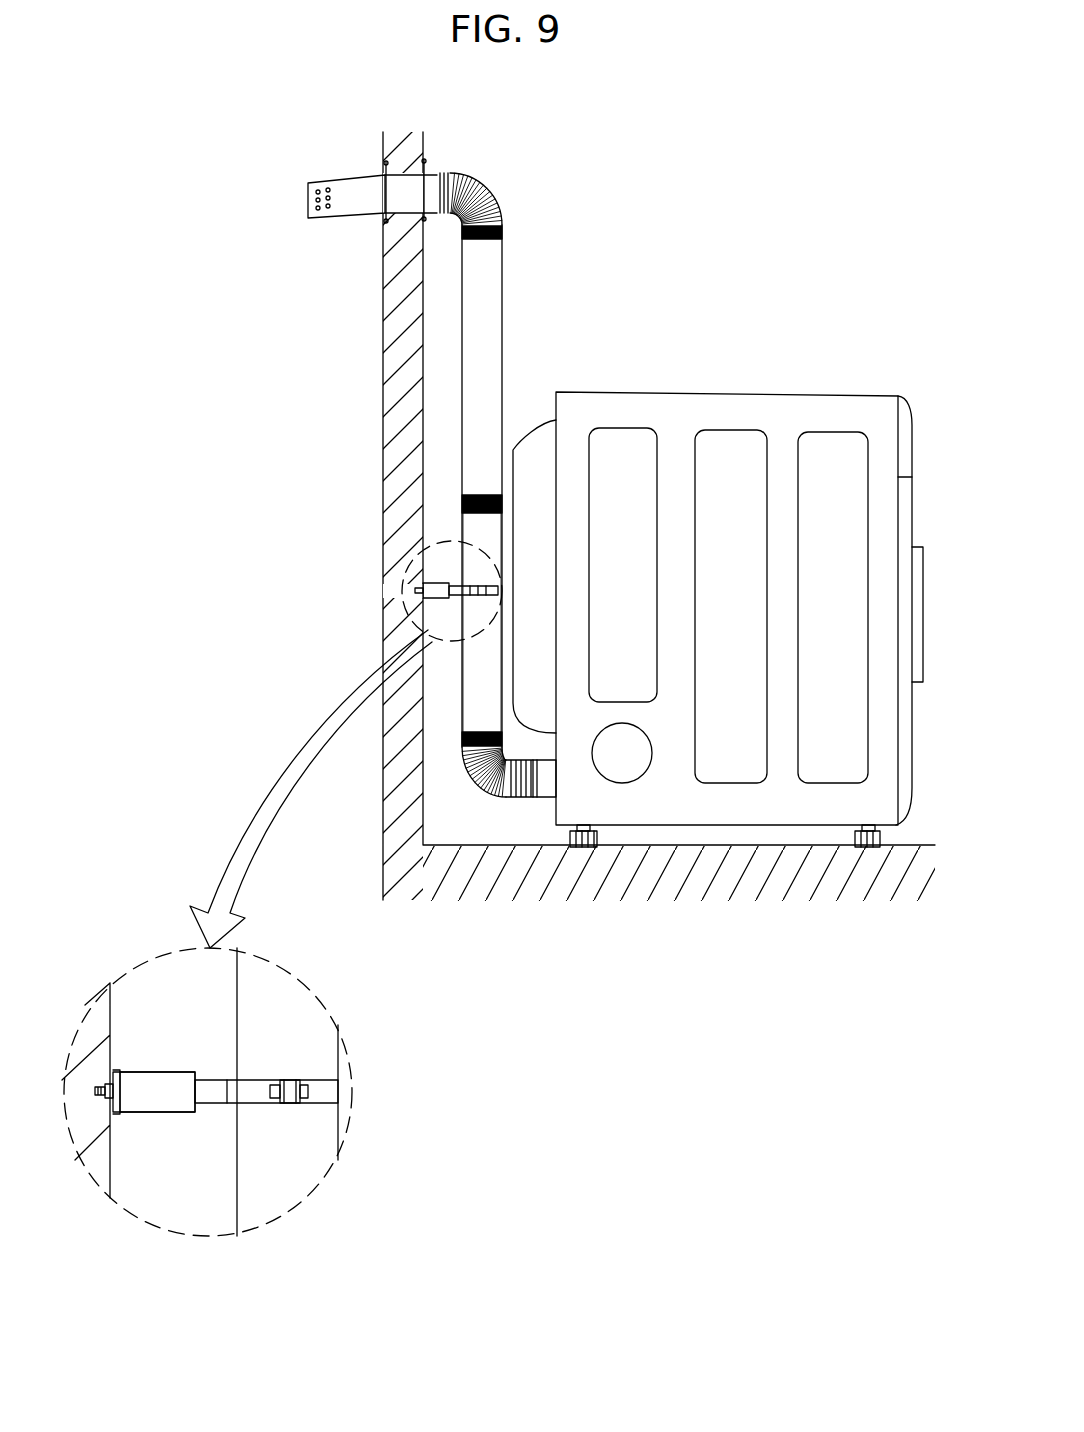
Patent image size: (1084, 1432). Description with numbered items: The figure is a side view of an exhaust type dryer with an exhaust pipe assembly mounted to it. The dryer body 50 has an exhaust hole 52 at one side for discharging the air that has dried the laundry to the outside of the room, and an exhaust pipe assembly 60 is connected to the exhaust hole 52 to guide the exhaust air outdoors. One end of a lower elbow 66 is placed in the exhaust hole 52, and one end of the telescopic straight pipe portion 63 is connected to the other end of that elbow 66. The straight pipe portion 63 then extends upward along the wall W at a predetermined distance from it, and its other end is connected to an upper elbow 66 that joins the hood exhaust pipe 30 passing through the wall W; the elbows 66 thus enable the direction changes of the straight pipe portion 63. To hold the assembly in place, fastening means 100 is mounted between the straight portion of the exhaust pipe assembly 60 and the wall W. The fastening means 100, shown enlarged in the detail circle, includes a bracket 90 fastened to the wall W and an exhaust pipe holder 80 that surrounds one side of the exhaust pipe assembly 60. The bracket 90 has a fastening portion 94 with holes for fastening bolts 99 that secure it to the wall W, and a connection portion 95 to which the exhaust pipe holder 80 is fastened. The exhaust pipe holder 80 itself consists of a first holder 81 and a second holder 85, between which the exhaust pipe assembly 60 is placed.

The hood exhaust pipe 30 is at (345, 190).
The wall W is at (405, 283).
The body 50 is at (665, 392).
The exhaust hole 52 is at (547, 785).
The exhaust pipe assembly 60 is at (507, 331).
The straight pipe portion 63 is at (460, 527).
The elbow 66 is at (497, 190).
The exhaust pipe holder 80 is at (430, 598).
The first holder 81 is at (247, 1097).
The second holder 85 is at (340, 1096).
The bracket 90 is at (432, 620).
The fastening portion 94 is at (107, 1100).
The connection portion 95 is at (198, 1100).
The fastening bolts 99 is at (128, 1093).
The fastening means 100 is at (282, 625).